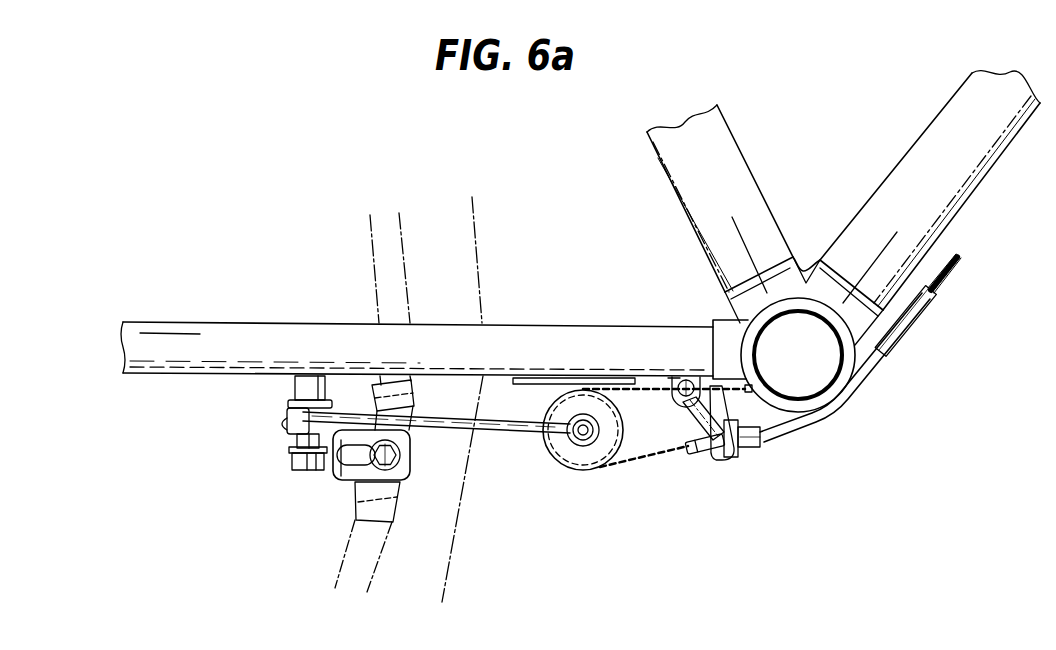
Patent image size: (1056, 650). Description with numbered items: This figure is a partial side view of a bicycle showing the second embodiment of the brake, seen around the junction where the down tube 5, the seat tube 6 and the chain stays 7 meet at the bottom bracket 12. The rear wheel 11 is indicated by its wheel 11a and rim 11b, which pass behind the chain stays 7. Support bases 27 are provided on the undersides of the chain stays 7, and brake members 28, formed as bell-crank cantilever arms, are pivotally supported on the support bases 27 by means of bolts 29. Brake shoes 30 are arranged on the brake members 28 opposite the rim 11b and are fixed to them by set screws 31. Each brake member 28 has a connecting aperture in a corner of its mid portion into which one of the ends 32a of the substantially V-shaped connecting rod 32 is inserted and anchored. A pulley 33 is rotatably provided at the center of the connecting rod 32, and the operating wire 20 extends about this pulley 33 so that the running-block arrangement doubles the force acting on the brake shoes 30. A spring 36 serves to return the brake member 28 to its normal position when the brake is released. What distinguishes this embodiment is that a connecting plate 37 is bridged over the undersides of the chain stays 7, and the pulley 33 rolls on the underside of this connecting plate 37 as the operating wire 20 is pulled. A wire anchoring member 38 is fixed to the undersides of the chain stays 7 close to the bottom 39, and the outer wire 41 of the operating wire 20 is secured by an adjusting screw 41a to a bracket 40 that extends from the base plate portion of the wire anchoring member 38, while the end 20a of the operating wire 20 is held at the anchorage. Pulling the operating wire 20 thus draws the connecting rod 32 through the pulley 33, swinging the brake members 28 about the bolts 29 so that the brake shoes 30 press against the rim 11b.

The down tube 5 is at (986, 168).
The seat tube 6 is at (742, 156).
The chain stays 7 is at (179, 322).
The rear wheel 11 is at (480, 225).
The wheel 11a is at (484, 286).
The rim 11b is at (380, 291).
The bottom bracket 12 is at (860, 368).
The operating wire 20 is at (633, 462).
The end of operating wire 20a is at (722, 397).
The support bases 27 is at (290, 384).
The brake members 28 is at (287, 423).
The bolts 29 is at (298, 470).
The brake shoes 30 is at (356, 502).
The set screws 31 is at (407, 482).
The connecting rod 32 is at (502, 434).
The ends of connecting rod 32a is at (292, 442).
The pulley 33 is at (572, 470).
The spring 36 is at (288, 405).
The connecting plate 37 is at (537, 384).
The wire anchoring member 38 is at (674, 377).
The bottom 39 is at (690, 401).
The bracket 40 is at (715, 461).
The outer wire 41 is at (855, 400).
The adjusting screw 41a is at (740, 455).